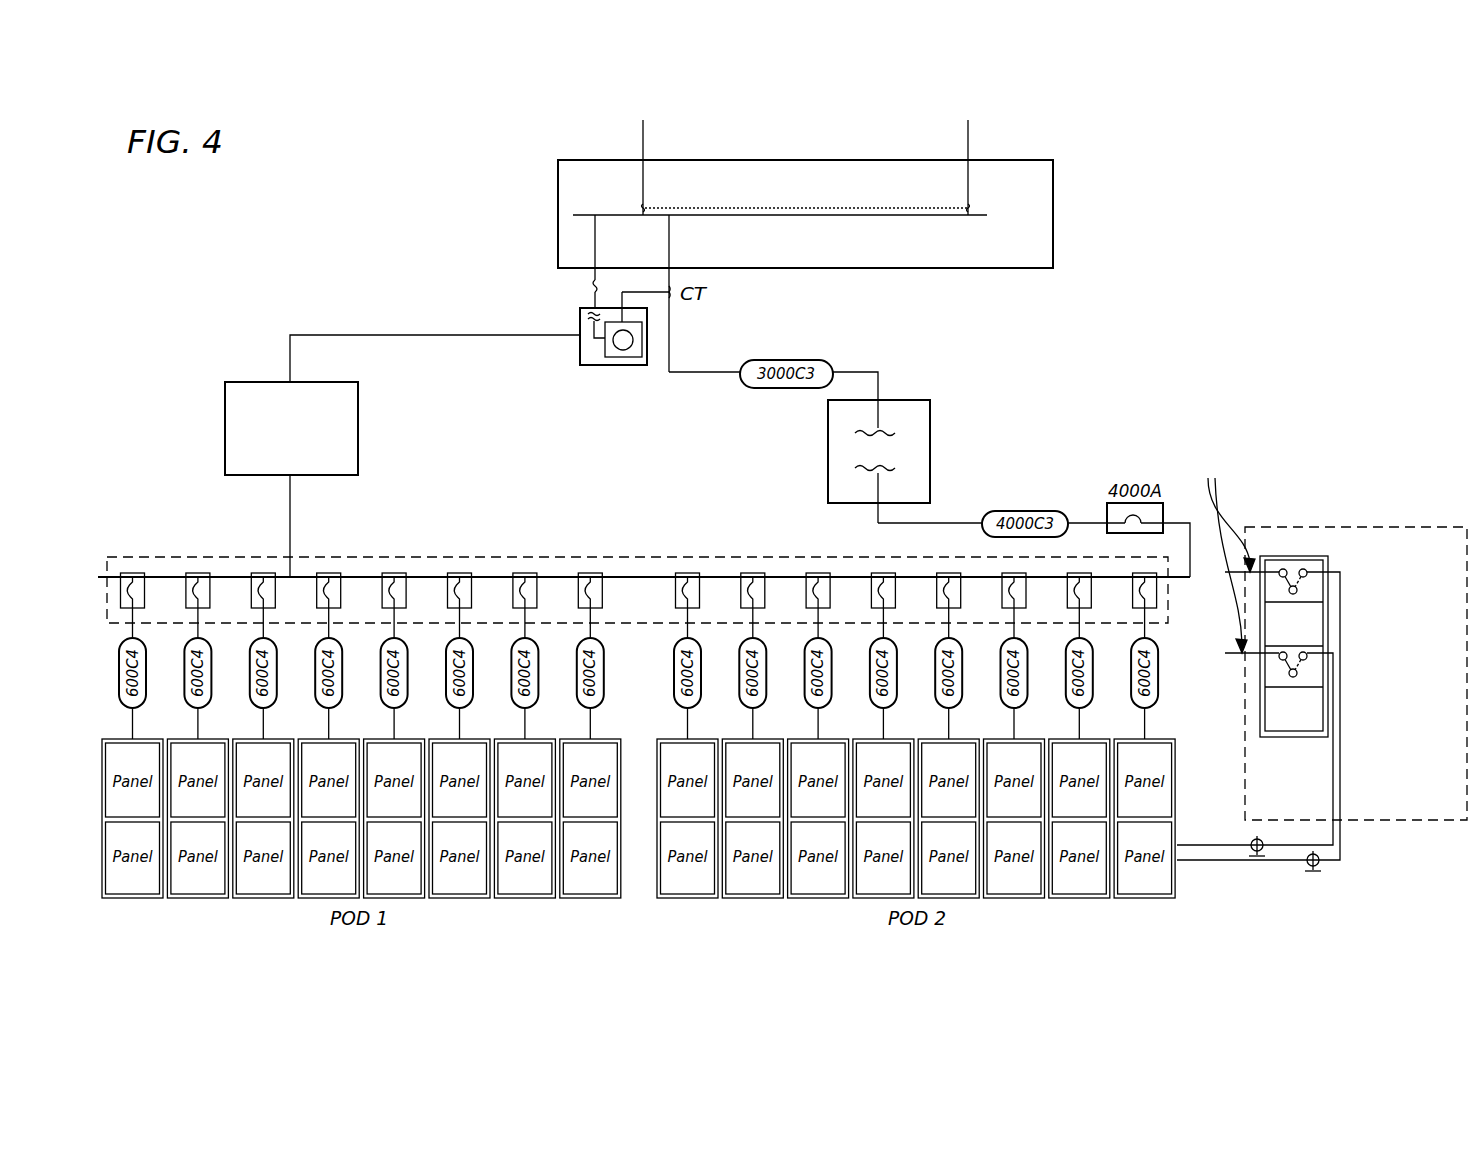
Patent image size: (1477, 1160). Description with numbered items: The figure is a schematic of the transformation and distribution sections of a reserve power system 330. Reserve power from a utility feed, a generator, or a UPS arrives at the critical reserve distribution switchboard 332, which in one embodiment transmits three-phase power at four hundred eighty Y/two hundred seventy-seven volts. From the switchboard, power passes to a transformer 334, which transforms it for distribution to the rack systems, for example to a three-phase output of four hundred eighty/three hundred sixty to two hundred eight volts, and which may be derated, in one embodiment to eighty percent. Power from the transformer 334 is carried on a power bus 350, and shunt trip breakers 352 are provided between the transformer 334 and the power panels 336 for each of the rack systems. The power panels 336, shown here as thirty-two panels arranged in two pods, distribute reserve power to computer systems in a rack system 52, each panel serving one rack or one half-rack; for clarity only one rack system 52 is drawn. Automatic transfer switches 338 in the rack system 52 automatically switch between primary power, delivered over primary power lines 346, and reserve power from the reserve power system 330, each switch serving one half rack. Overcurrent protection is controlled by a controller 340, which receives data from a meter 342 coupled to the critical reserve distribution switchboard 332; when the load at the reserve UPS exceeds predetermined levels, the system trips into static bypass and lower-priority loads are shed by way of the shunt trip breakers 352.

The reserve power system 330 is at (1288, 155).
The critical reserve distribution switchboard 332 is at (1053, 228).
The transformer 334 is at (930, 442).
The power panels 336 is at (1143, 892).
The automatic transfer switches 338 is at (1317, 567).
The controller 340 is at (272, 448).
The meter 342 is at (580, 352).
The primary power lines 346 is at (1225, 572).
The power bus 350 is at (638, 575).
The shunt trip breakers 352 is at (138, 572).
The rack system 52 is at (1286, 738).